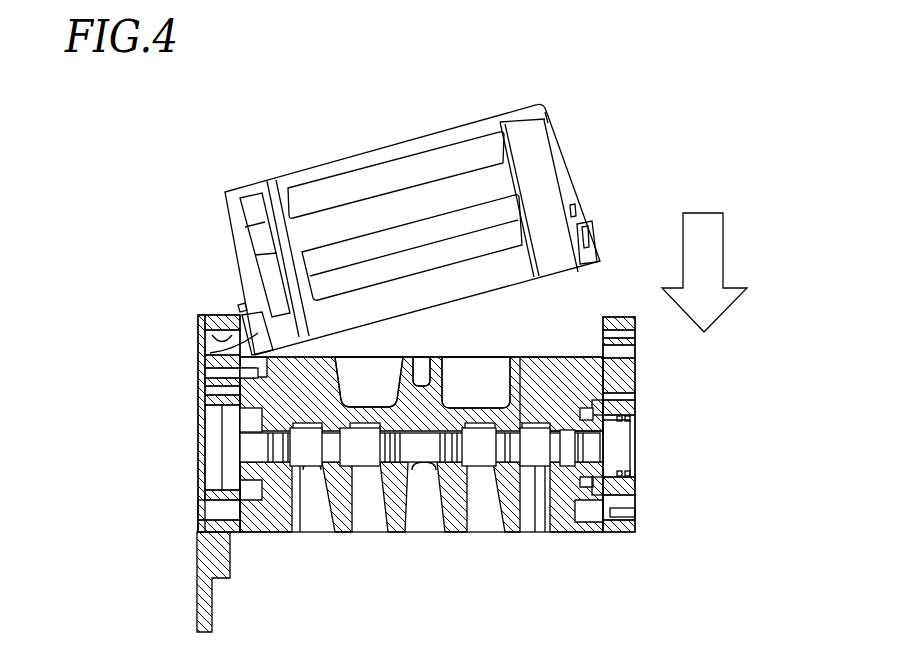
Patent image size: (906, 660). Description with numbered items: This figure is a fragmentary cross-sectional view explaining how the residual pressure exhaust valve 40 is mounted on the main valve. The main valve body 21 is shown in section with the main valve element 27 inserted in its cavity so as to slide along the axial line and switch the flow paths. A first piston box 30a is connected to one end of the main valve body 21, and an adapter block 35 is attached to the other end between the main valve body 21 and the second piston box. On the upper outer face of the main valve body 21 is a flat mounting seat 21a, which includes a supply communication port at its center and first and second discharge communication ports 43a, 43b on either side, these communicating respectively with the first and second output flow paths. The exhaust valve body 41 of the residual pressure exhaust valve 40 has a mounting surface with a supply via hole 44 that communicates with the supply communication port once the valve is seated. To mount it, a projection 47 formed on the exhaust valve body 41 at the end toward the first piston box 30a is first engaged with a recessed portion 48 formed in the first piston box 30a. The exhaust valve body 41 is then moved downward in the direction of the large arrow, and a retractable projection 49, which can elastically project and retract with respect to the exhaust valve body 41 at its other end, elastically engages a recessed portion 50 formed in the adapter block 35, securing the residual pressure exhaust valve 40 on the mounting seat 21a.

The residual pressure exhaust valve 40 is at (392, 128).
The exhaust valve body 41 is at (320, 168).
The retractable projection 49 is at (596, 235).
The recessed portion 50 is at (618, 315).
The first piston box 30a is at (186, 322).
The recessed portion 48 is at (207, 314).
The projection 47 is at (245, 338).
The main valve body 21 is at (575, 345).
The mounting seat 21a is at (588, 385).
The adapter block 35 is at (652, 416).
The first discharge communication port 43a is at (368, 378).
The supply via hole 44 is at (422, 372).
The second discharge communication port 43b is at (485, 380).
The main valve element 27 is at (360, 452).